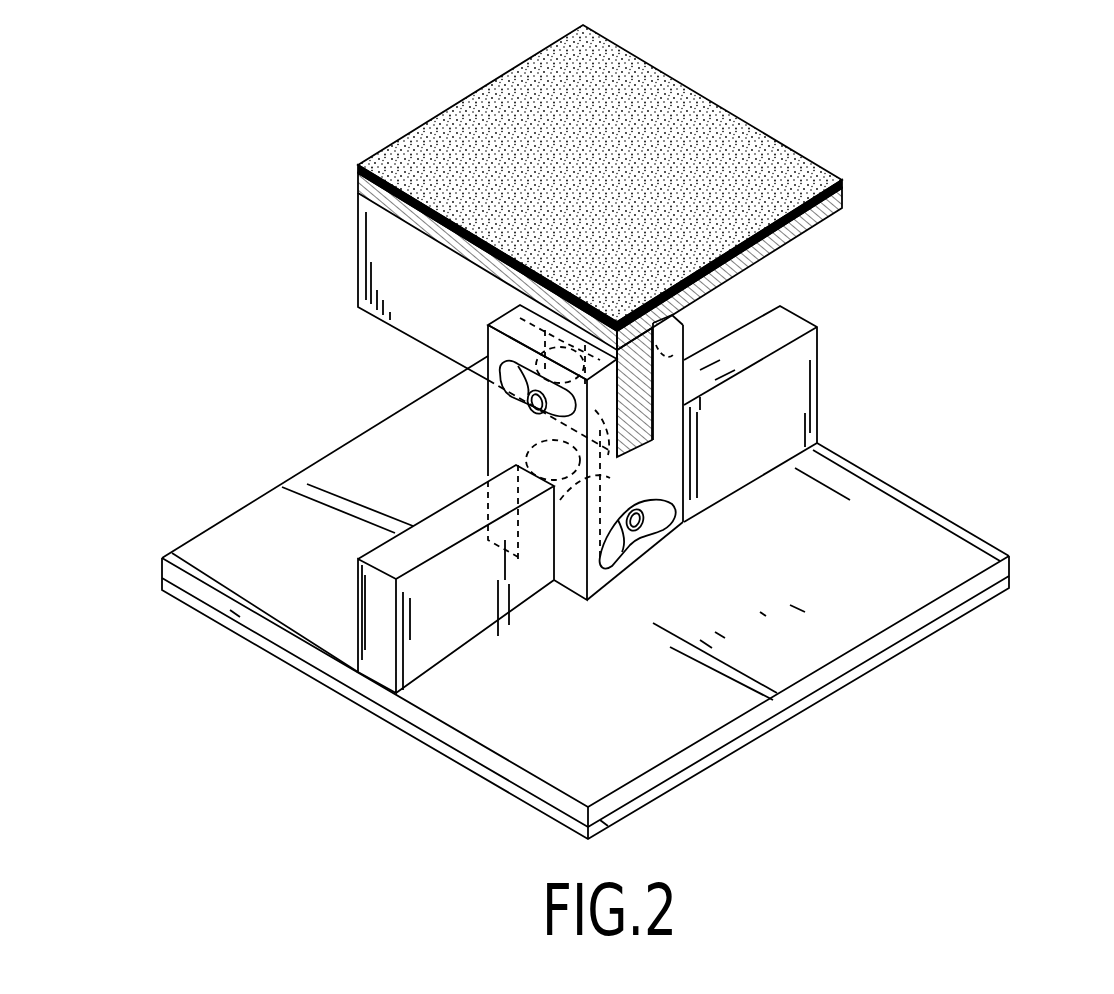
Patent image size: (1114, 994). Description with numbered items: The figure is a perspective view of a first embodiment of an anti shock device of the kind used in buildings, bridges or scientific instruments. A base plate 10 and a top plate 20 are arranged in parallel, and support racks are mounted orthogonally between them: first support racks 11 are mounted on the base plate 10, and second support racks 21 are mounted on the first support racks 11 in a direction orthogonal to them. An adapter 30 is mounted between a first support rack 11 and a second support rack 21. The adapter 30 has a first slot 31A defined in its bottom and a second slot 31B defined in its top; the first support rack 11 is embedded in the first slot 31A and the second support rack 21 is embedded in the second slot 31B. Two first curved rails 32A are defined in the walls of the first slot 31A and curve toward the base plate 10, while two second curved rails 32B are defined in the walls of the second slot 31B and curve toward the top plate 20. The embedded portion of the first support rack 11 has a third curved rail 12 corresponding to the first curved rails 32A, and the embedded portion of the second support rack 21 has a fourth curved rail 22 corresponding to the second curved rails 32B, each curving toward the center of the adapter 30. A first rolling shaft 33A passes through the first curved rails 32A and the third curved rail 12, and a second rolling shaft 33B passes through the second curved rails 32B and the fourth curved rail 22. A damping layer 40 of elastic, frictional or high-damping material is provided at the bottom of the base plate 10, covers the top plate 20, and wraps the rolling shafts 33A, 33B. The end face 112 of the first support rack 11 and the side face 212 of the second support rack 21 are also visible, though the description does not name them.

The base plate 10 is at (1003, 545).
The first support rack 11 is at (537, 551).
The end face of rib 112 is at (365, 581).
The third curved rail 12 is at (590, 498).
The top plate 20 is at (850, 221).
The second support rack 21 is at (345, 294).
The side face of fin 212 is at (375, 235).
The fourth curved rail 22 is at (570, 385).
The adapter 30 is at (573, 498).
The first slot 31A is at (544, 560).
The second slot 31B is at (653, 407).
The first curved rail 32A is at (608, 550).
The second curved rail 32B is at (499, 378).
The first rolling shaft 33A is at (638, 530).
The second rolling shaft 33B is at (533, 408).
The damping layer 40 is at (786, 222).